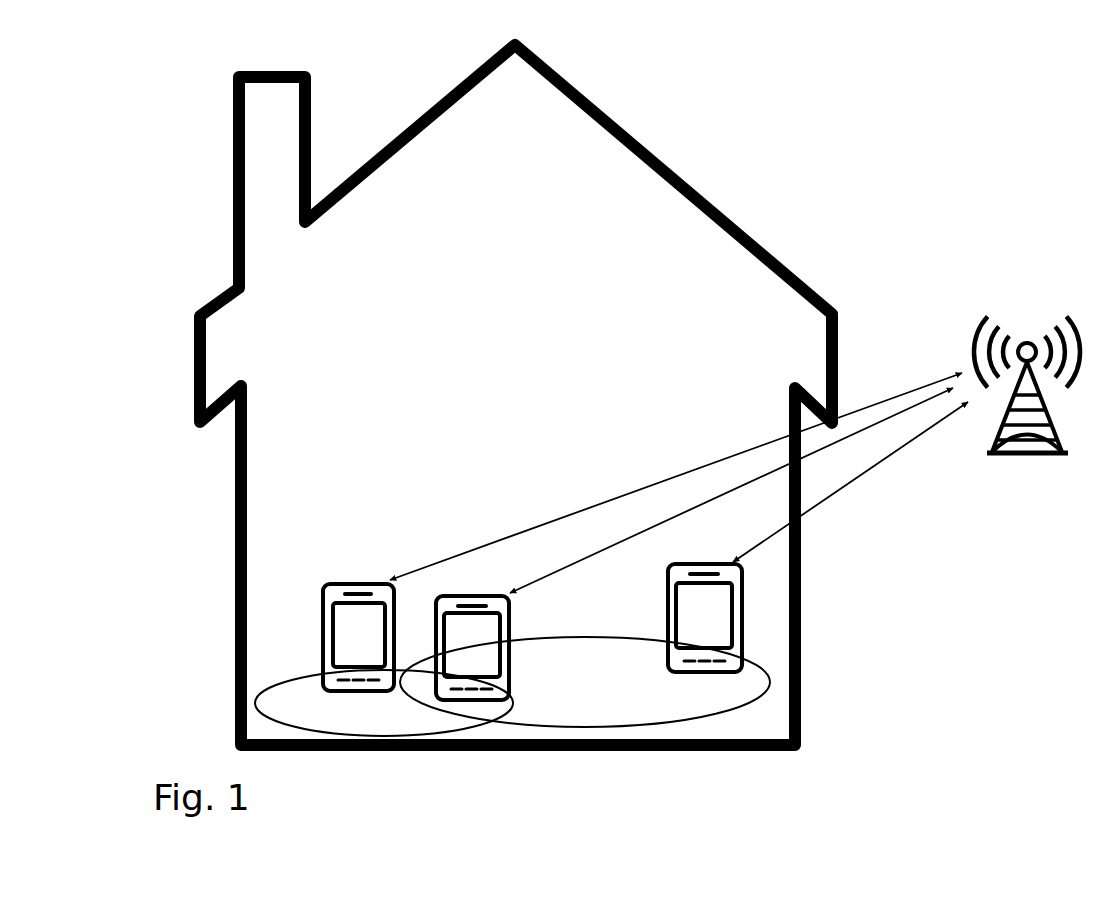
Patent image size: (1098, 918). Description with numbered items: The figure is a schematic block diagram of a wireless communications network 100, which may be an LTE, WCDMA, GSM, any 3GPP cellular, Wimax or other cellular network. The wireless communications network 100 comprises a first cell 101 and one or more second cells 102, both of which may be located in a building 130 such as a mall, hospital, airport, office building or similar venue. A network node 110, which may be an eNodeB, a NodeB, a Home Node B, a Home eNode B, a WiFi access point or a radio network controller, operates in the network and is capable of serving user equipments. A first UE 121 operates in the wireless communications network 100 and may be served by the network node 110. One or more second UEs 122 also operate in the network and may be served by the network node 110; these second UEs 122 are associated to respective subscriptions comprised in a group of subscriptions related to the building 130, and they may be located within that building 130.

The wireless communications network 100 is at (626, 428).
The building 130 is at (652, 150).
The second cell 102 is at (273, 687).
The first cell 101 is at (753, 663).
The second UE 122 is at (342, 655).
The first UE 121 is at (686, 631).
The network node 110 is at (1002, 457).